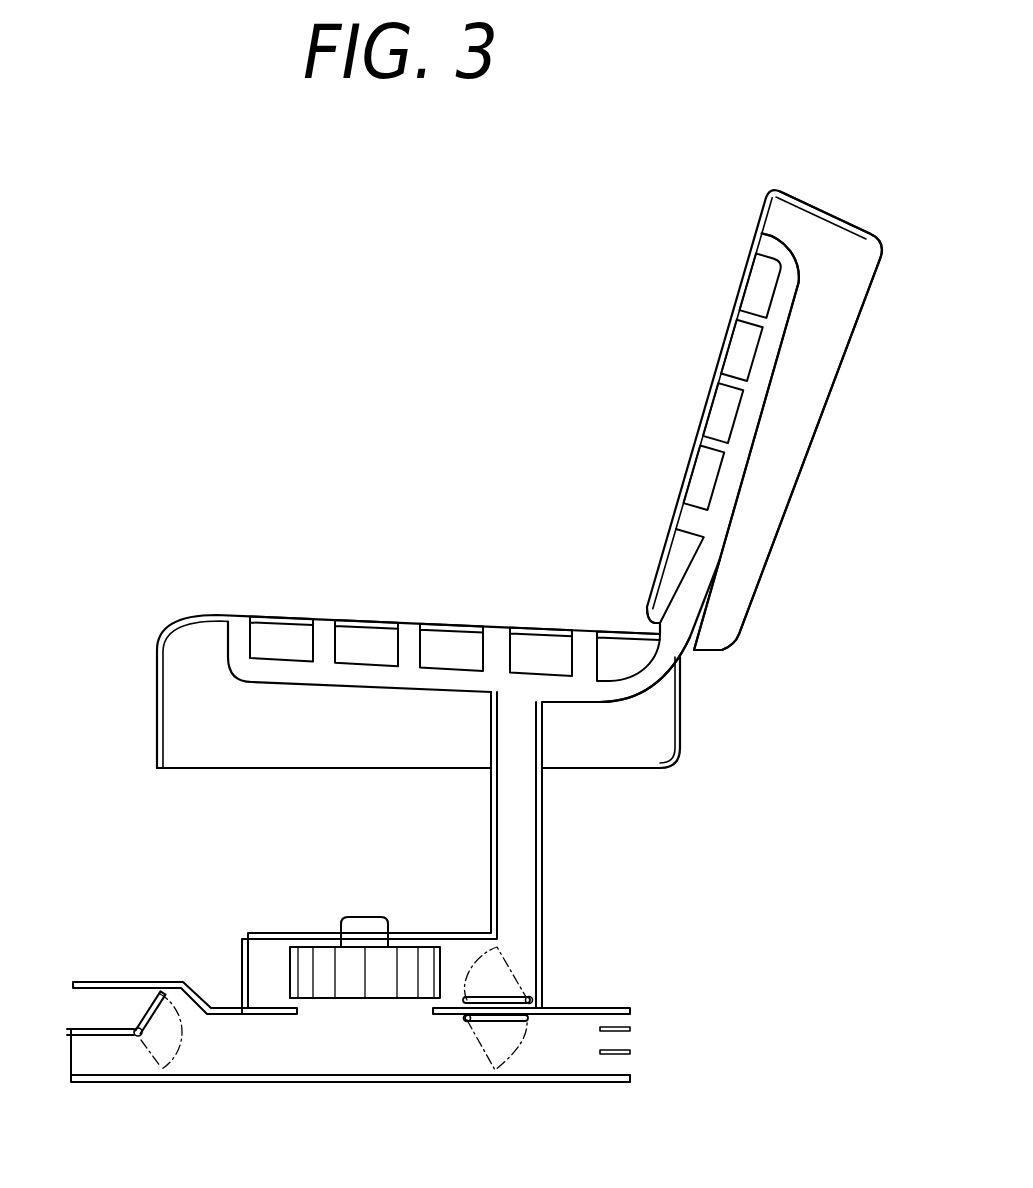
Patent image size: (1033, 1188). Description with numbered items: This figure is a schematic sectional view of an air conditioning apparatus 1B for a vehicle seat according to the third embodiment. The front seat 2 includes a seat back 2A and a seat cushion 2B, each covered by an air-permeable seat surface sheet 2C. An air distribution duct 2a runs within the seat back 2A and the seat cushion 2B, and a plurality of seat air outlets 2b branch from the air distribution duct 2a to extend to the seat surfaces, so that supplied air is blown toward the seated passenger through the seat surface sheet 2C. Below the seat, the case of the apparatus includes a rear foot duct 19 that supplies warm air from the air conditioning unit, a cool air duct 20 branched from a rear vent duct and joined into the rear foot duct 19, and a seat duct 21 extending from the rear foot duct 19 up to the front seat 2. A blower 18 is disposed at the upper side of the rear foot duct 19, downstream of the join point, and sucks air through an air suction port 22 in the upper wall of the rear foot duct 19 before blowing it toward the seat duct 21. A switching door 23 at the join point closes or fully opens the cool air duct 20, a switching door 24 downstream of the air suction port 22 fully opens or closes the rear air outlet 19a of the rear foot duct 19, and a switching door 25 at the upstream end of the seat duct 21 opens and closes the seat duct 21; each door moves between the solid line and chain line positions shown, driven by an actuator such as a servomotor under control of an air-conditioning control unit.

The front seat 2 is at (826, 182).
The seat back 2A is at (806, 422).
The air distribution duct 2a is at (674, 653).
The seat cushion 2B is at (221, 745).
The seat air outlets 2b is at (722, 380).
The seat surface sheet 2C is at (745, 265).
The air conditioning apparatus 1B is at (122, 844).
The blower 18 is at (361, 920).
The rear foot duct 19 is at (225, 1083).
The rear air outlet 19a is at (620, 1022).
The cool air duct 20 is at (93, 982).
The seat duct 21 is at (545, 838).
The air suction port 22 is at (313, 1010).
The switching door 23 is at (143, 1008).
The switching door 24 is at (503, 1023).
The switching door 25 is at (515, 984).